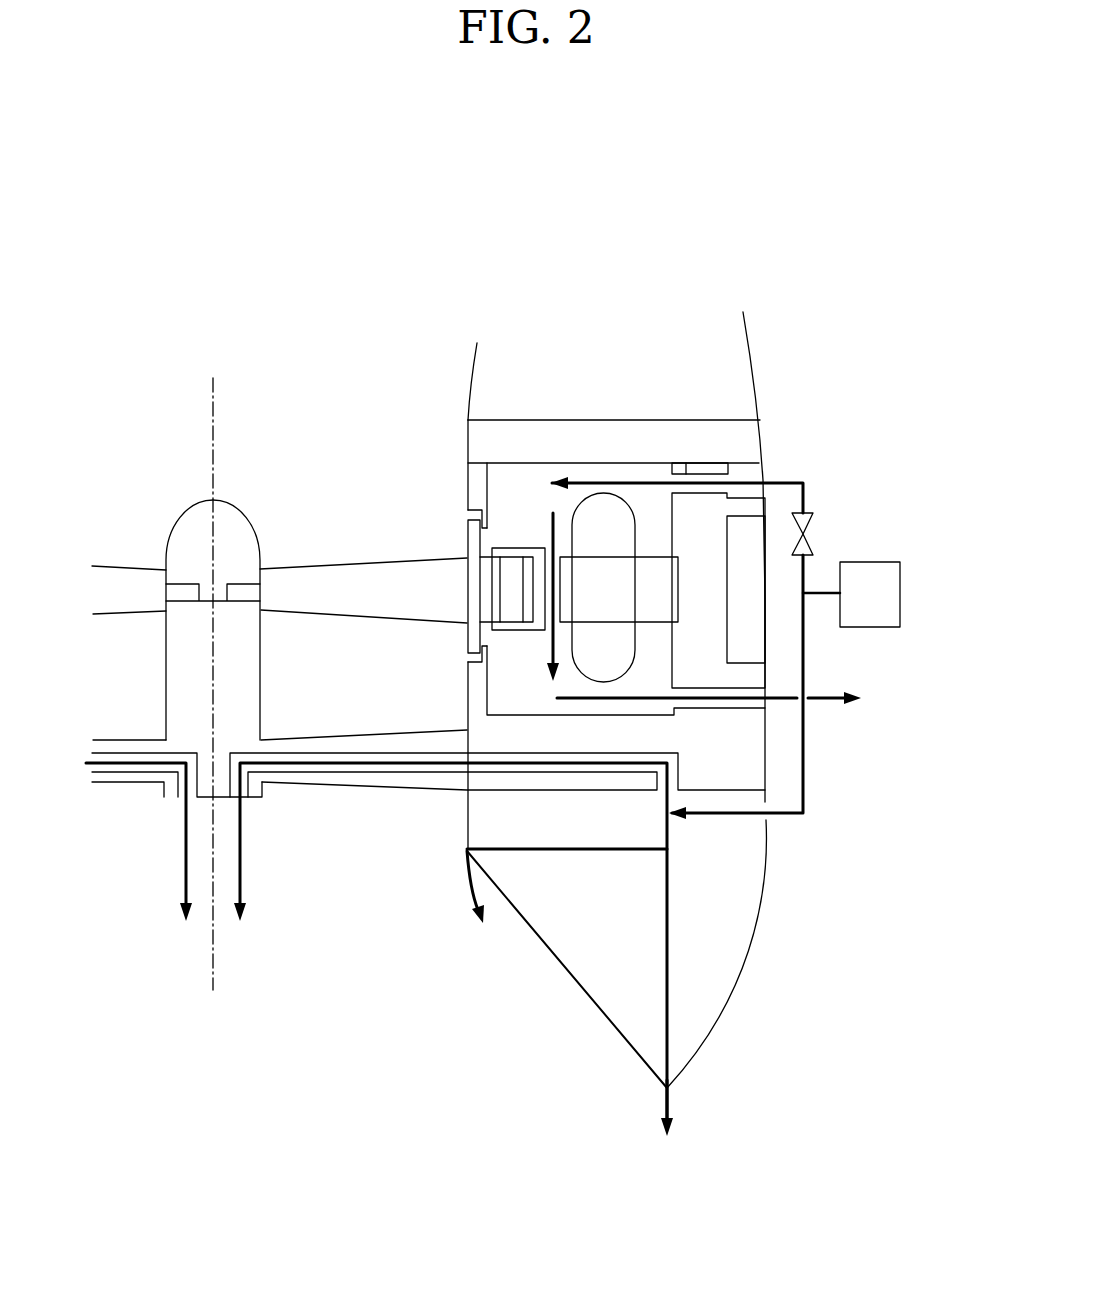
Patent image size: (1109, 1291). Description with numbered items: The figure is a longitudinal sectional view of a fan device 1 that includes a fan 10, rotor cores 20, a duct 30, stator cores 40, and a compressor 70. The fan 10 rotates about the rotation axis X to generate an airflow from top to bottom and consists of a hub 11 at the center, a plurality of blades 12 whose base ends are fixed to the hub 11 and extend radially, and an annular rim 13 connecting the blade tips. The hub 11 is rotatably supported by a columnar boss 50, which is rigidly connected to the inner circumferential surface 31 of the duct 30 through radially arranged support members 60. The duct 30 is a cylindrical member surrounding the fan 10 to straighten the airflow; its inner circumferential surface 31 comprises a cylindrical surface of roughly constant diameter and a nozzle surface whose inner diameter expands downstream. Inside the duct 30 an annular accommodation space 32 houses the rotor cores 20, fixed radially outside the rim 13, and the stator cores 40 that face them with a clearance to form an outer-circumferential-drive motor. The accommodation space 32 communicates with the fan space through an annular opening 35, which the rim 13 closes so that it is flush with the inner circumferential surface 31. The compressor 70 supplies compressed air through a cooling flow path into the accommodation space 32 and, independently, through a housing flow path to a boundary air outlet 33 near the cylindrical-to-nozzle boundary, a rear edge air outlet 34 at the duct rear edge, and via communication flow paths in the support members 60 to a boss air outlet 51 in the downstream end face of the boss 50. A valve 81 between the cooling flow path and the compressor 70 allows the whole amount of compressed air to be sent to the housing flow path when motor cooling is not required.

The fan device 1 is at (394, 250).
The fan 10 is at (112, 542).
The hub 11 is at (187, 517).
The blades 12 is at (298, 567).
The rim 13 is at (466, 589).
The rotor cores 20 is at (512, 547).
The duct 30 is at (765, 433).
The inner circumferential surface 31 is at (465, 465).
The accommodation space 32 is at (530, 697).
The boundary air outlet 33 is at (465, 851).
The rear edge air outlet 34 is at (662, 1091).
The opening 35 is at (467, 515).
The stator cores 40 is at (607, 496).
The boss 50 is at (165, 672).
The boss air outlet 51 is at (181, 798).
The support members 60 is at (297, 737).
The compressor 70 is at (903, 593).
The valve 81 is at (808, 520).